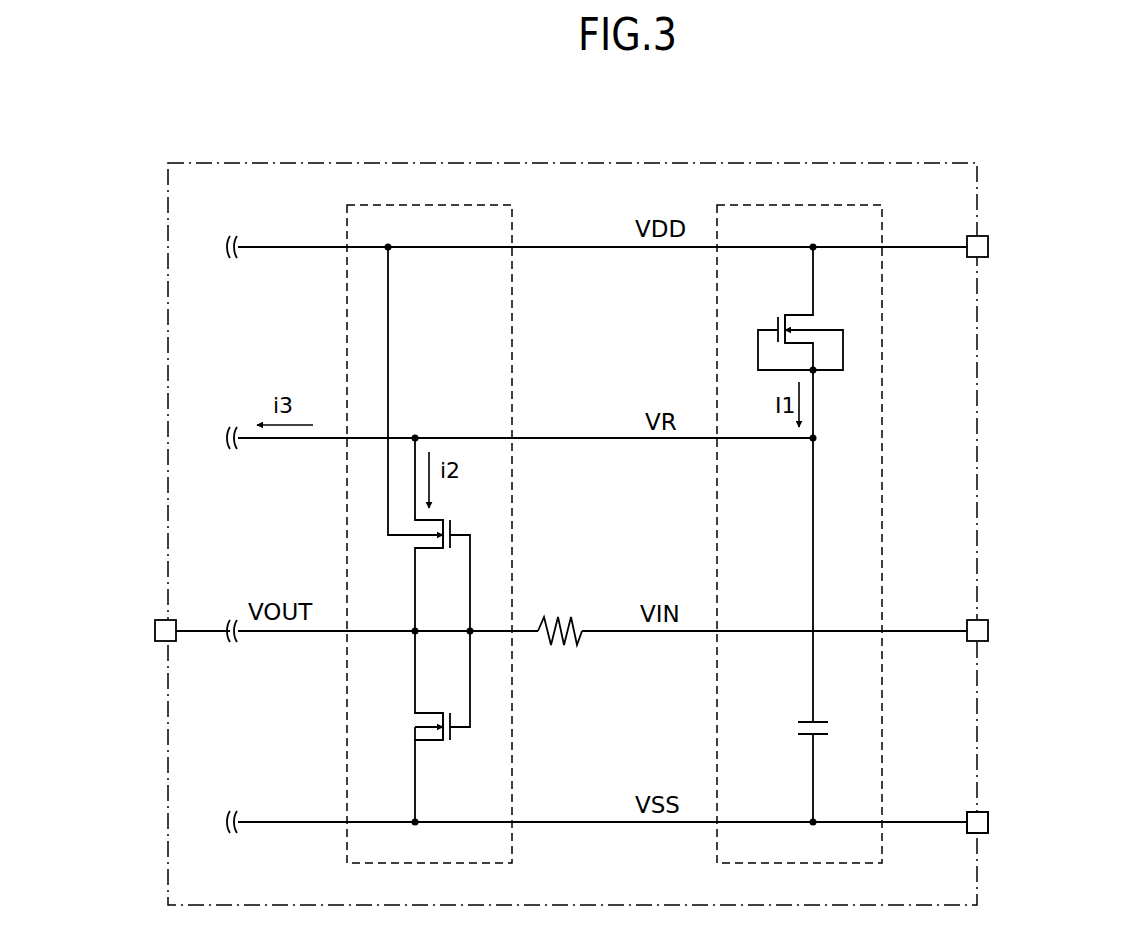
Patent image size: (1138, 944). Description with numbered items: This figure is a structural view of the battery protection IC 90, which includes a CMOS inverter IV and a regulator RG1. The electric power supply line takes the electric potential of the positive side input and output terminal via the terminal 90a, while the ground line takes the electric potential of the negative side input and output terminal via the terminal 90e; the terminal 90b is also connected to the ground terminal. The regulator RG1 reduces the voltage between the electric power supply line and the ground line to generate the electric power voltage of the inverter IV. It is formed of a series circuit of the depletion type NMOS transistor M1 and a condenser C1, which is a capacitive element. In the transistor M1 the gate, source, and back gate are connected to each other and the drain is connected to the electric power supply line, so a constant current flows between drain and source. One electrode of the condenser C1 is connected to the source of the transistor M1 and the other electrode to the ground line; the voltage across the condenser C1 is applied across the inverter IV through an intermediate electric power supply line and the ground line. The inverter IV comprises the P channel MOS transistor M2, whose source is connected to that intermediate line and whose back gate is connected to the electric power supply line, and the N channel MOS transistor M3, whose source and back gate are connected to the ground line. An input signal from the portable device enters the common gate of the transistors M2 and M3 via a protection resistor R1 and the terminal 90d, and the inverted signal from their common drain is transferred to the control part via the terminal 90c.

The battery protection IC 90 is at (875, 163).
The terminal 90a is at (985, 236).
The terminal 90b is at (977, 822).
The terminal 90c is at (157, 620).
The terminal 90d is at (987, 620).
The terminal 90e is at (987, 812).
The CMOS inverter IV is at (513, 318).
The regulator RG1 is at (717, 318).
The depletion type NMOS transistor M1 is at (778, 317).
The P channel MOS transistor M2 is at (469, 512).
The N channel MOS transistor M3 is at (450, 738).
The protection resistor R1 is at (548, 622).
The condenser C1 is at (805, 722).